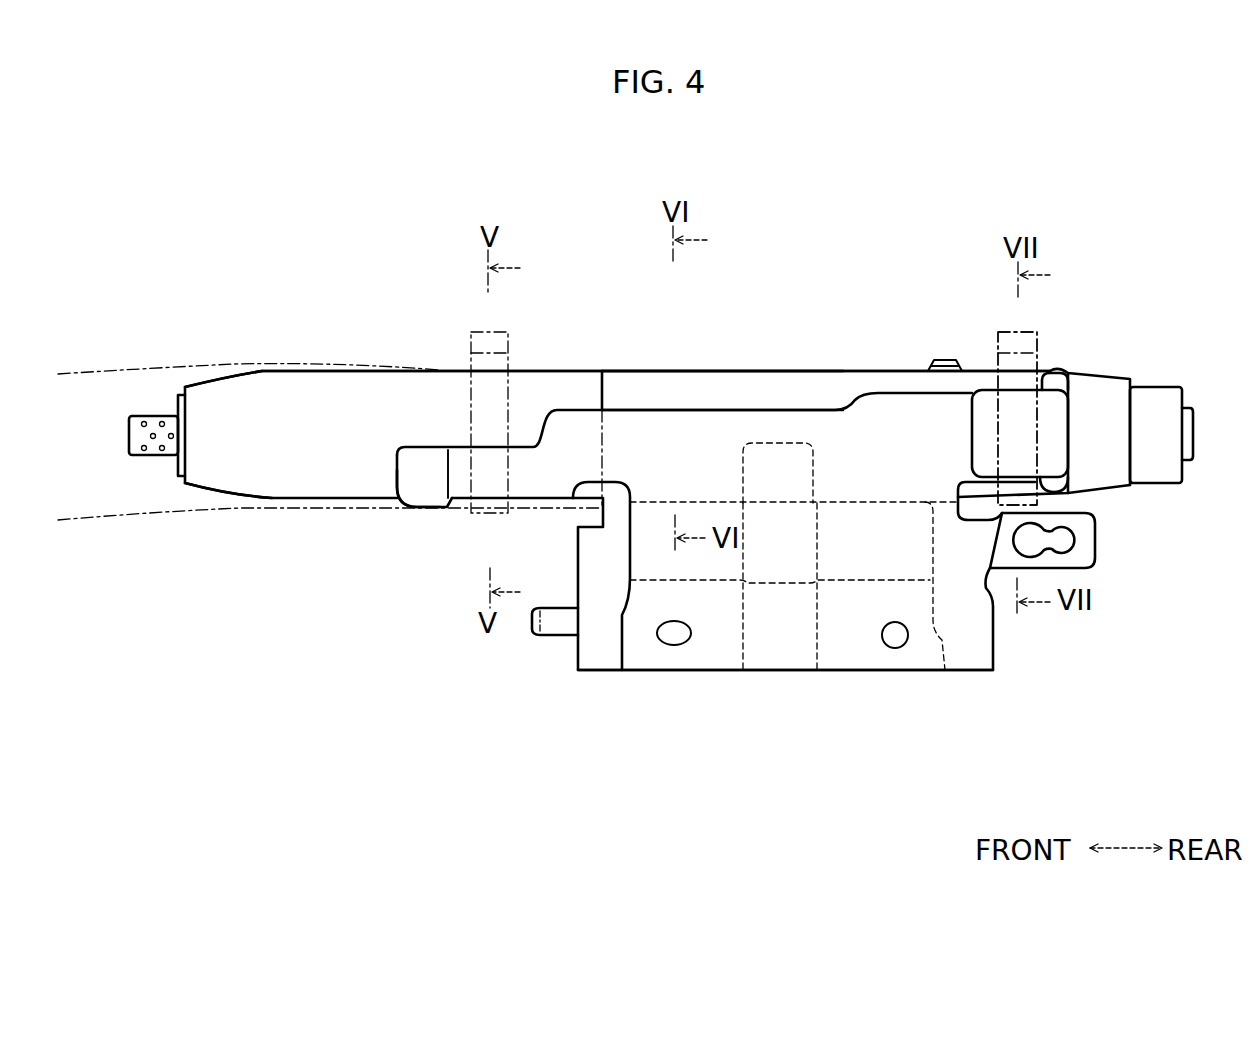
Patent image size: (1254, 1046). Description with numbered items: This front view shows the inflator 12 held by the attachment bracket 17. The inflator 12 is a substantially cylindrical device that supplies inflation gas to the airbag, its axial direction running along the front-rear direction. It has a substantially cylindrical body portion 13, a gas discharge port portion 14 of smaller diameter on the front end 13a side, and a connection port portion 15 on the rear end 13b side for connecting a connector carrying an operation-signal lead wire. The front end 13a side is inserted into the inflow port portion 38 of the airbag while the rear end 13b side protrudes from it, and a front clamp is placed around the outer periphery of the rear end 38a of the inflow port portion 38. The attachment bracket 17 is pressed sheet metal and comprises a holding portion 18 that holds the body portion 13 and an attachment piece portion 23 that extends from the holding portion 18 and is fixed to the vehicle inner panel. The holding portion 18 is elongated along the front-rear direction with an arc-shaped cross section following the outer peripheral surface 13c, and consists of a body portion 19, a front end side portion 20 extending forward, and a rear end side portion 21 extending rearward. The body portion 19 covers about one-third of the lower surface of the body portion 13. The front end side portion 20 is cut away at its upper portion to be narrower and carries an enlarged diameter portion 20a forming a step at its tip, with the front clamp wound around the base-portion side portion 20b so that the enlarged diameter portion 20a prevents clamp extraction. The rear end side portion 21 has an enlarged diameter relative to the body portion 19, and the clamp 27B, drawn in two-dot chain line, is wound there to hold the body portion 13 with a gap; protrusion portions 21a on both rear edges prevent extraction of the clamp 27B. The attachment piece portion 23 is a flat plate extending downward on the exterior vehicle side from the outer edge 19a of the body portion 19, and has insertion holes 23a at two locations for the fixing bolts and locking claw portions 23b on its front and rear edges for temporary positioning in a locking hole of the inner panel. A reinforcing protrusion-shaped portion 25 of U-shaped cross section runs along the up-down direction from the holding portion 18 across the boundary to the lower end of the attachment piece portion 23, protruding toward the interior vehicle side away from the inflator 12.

The inflator 12 is at (747, 337).
The body portion 13 is at (811, 366).
The front end 13a is at (218, 472).
The rear end 13b is at (1102, 385).
The outer peripheral surface 13c is at (641, 395).
The gas discharge port portion 14 is at (148, 412).
The connection port portion 15 is at (1160, 395).
The attachment bracket 17 is at (896, 366).
The holding portion 18 is at (694, 402).
The body portion 19 is at (772, 430).
The outer edge 19a is at (867, 500).
The front end side portion 20 is at (437, 520).
The enlarged diameter portion 20a is at (415, 492).
The base-portion side portion 20b is at (496, 487).
The rear end side portion 21 is at (1020, 405).
The protrusion portions 21a is at (1057, 380).
The attachment piece portion 23 is at (677, 684).
The insertion holes 23a is at (674, 633).
The locking claw portions 23b is at (535, 633).
The protrusion-shaped portion 25 is at (722, 637).
The clamp 27B is at (1033, 330).
The inflow port portion 38 is at (235, 362).
The rear end 38a is at (614, 392).